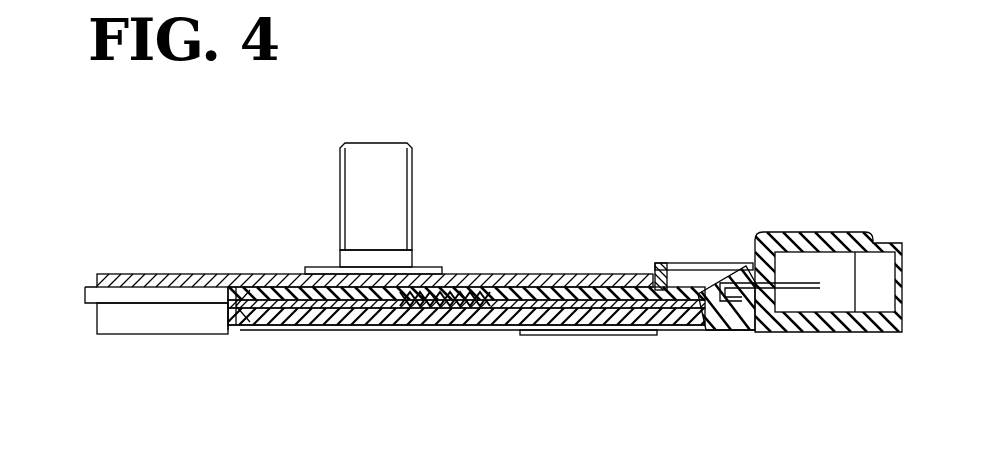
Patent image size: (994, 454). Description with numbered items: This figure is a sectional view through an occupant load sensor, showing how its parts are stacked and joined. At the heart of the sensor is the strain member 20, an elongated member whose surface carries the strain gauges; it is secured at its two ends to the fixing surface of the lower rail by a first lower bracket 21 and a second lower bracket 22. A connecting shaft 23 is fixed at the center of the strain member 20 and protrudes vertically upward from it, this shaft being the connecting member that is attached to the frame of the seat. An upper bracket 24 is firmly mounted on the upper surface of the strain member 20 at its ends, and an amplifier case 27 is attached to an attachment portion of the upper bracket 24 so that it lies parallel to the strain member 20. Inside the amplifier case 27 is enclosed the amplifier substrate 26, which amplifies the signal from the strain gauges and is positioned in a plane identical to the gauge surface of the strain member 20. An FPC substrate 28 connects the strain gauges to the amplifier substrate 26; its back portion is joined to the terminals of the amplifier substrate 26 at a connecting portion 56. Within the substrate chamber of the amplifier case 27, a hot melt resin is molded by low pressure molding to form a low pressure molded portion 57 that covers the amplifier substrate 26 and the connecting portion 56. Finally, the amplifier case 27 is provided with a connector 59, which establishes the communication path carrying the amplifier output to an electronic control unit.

The strain member 20 is at (97, 296).
The first lower bracket 21 is at (143, 320).
The second lower bracket 22 is at (645, 333).
The connecting shaft 23 is at (396, 188).
The upper bracket 24 is at (182, 273).
The amplifier substrate 26 is at (598, 305).
The amplifier case 27 is at (562, 293).
The FPC substrate 28 is at (310, 312).
The connecting portion 56 is at (440, 312).
The low pressure molded portion 57 is at (518, 320).
The connector 59 is at (848, 320).